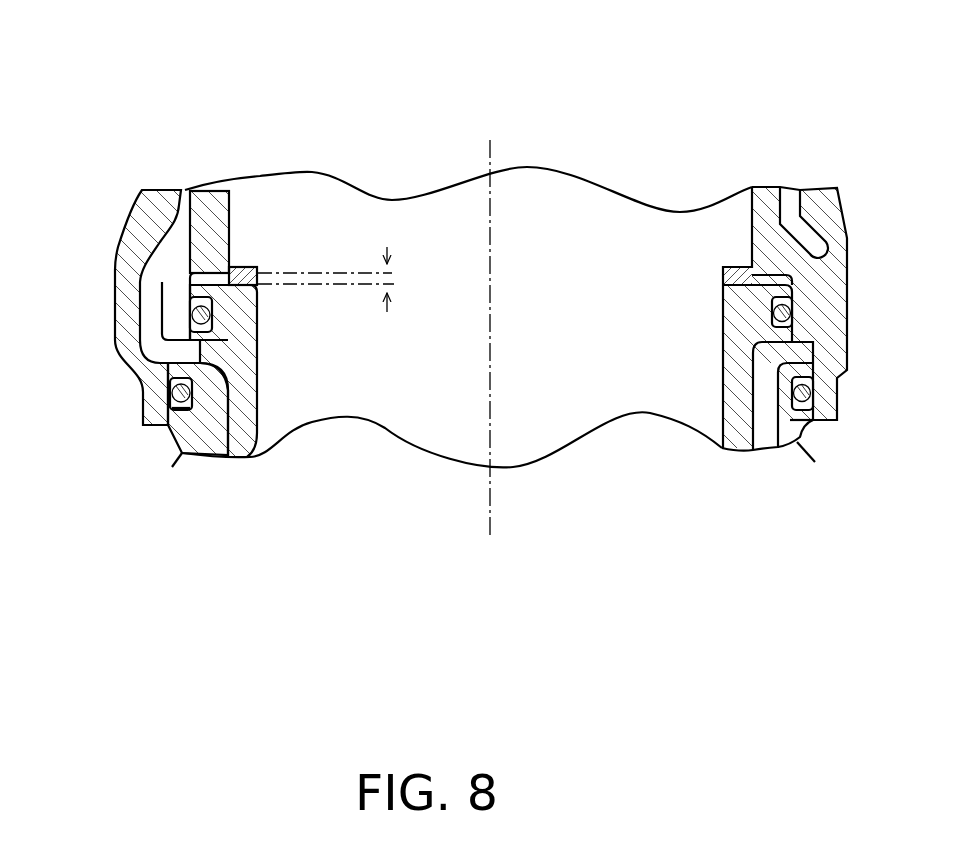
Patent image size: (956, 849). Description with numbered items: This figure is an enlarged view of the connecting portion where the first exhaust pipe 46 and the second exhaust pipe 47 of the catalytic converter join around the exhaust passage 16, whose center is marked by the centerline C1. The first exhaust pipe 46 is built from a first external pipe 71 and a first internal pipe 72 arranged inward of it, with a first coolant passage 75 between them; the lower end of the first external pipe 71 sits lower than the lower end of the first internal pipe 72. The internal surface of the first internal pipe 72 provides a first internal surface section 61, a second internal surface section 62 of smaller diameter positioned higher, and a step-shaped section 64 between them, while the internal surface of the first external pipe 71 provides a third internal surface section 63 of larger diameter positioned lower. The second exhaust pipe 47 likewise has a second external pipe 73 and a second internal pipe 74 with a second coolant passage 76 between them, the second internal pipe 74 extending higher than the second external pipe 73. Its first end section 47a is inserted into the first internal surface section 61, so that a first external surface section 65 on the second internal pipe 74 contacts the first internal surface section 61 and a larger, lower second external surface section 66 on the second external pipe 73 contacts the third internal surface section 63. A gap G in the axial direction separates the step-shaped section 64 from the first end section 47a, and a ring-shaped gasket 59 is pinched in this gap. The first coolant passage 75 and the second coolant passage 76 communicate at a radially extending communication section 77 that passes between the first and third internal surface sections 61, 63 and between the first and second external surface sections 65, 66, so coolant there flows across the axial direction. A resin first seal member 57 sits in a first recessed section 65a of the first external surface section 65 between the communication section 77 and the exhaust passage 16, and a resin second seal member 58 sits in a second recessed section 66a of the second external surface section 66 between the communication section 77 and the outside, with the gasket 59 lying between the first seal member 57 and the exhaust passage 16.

The exhaust passage 16 is at (592, 333).
The first exhaust pipe 46 is at (123, 229).
The second exhaust pipe 47 is at (170, 457).
The first end section 47a is at (212, 213).
The first seal member 57 is at (198, 322).
The second seal member 58 is at (177, 393).
The gasket 59 is at (250, 293).
The first internal surface section 61 is at (260, 286).
The second internal surface section 62 is at (234, 215).
The third internal surface section 63 is at (257, 430).
The step-shaped section 64 is at (230, 282).
The first external surface section 65 is at (185, 297).
The first recessed section 65a is at (255, 340).
The second external surface section 66 is at (163, 383).
The second recessed section 66a is at (200, 392).
The first external pipe 71 is at (126, 210).
The first internal pipe 72 is at (172, 188).
The second external pipe 73 is at (172, 468).
The second internal pipe 74 is at (247, 450).
The first coolant passage 75 is at (207, 278).
The second coolant passage 76 is at (195, 447).
The communication section 77 is at (177, 352).
The gap G is at (394, 284).
The centerline C1 is at (490, 497).